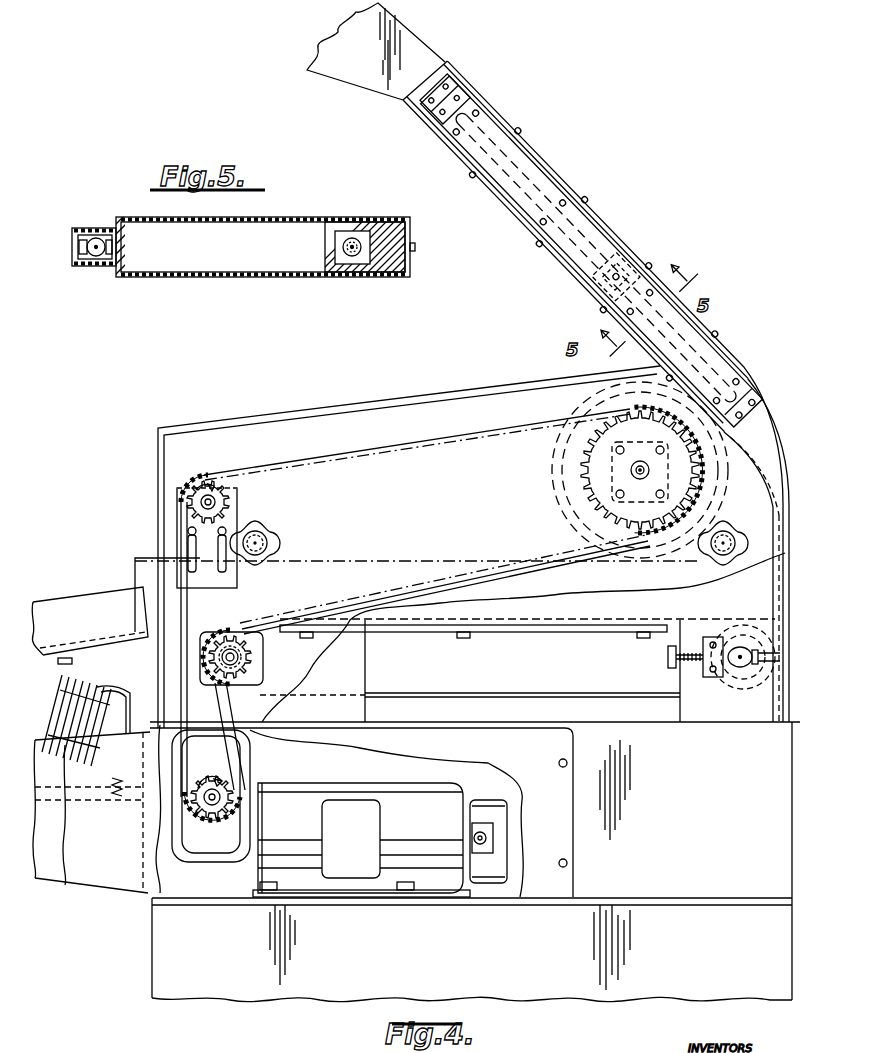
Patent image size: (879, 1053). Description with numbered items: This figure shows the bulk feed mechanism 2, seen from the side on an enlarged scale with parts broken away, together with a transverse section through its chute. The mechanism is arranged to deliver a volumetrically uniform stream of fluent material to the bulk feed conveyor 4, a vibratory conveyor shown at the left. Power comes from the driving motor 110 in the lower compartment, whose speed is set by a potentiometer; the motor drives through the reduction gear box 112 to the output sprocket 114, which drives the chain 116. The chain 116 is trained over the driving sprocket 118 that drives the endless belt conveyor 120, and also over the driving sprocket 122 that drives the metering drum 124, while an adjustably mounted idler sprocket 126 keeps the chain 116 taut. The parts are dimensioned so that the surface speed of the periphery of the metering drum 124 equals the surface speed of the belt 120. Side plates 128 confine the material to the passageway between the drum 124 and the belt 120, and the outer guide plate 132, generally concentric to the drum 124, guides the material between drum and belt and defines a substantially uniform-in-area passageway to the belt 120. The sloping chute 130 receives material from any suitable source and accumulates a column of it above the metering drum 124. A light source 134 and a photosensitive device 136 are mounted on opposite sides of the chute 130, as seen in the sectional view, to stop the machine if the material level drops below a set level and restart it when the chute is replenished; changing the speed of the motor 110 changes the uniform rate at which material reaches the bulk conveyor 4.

In FIG. 4, the bulk feed mechanism 2 is at (196, 427).
In FIG. 4, the bulk feed conveyor 4 is at (107, 586).
In FIG. 4, the driving motor 110 is at (407, 797).
In FIG. 4, the reduction gear box 112 is at (200, 853).
In FIG. 4, the output sprocket 114 is at (228, 792).
In FIG. 4, the chain 116 is at (240, 748).
In FIG. 4, the driving sprocket 118 is at (248, 655).
In FIG. 4, the endless belt conveyor 120 is at (519, 617).
In FIG. 4, the driving sprocket 122 is at (583, 470).
In FIG. 4, the metering drum 124 is at (566, 500).
In FIG. 4, the idler sprocket 126 is at (224, 503).
In FIG. 4, the side plates 128 is at (596, 580).
In FIG. 5, the sloping chute 130 is at (320, 218).
In FIG. 4, the sloping chute 130 is at (542, 162).
In FIG. 4, the outer guide plate 132 is at (781, 432).
In FIG. 5, the light source 134 is at (100, 226).
In FIG. 4, the light source 134 is at (626, 255).
In FIG. 5, the photosensitive device 136 is at (362, 232).